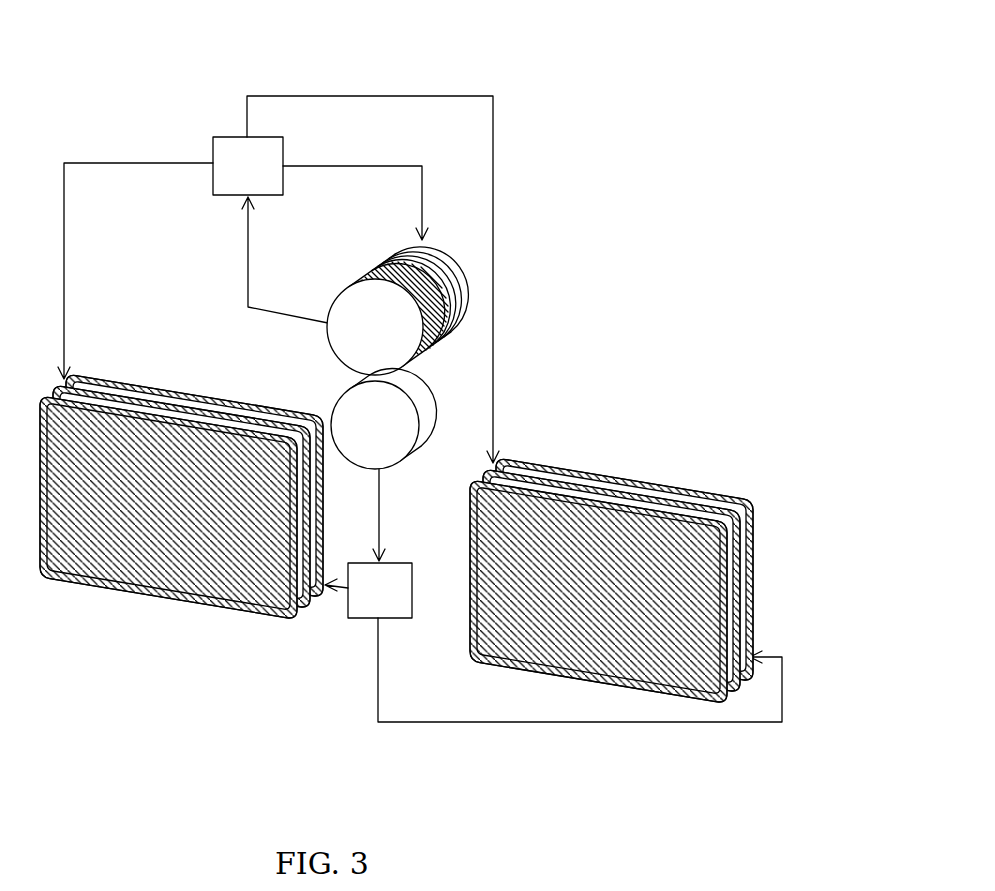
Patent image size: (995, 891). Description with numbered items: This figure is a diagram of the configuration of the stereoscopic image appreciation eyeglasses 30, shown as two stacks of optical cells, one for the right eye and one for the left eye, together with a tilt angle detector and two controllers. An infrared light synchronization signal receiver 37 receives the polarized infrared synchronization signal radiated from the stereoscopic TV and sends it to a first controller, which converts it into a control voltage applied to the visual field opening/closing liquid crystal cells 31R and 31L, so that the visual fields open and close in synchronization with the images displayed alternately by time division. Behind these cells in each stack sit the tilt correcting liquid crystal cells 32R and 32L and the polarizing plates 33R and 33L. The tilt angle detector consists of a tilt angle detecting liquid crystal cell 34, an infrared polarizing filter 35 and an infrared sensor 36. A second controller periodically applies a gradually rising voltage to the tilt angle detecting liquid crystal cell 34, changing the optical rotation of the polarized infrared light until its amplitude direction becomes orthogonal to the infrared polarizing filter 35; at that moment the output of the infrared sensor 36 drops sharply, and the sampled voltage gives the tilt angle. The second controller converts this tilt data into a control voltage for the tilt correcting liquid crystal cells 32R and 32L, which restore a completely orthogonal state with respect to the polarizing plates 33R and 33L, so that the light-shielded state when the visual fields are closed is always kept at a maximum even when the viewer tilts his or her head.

The stereoscopic image appreciation eyeglasses 30 is at (126, 126).
The visual field opening/closing liquid crystal cell 31L is at (120, 372).
The tilt correcting liquid crystal cell 32L is at (167, 397).
The polarizing plate 33L is at (217, 425).
The visual field opening/closing liquid crystal cell 31R is at (552, 457).
The tilt correcting liquid crystal cell 32R is at (608, 490).
The polarizing plate 33R is at (682, 510).
The tilt angle detecting liquid crystal cell 34 is at (463, 260).
The infrared polarizing filter 35 is at (402, 243).
The infrared sensor 36 is at (367, 276).
The infrared light synchronization signal receiver 37 is at (438, 395).